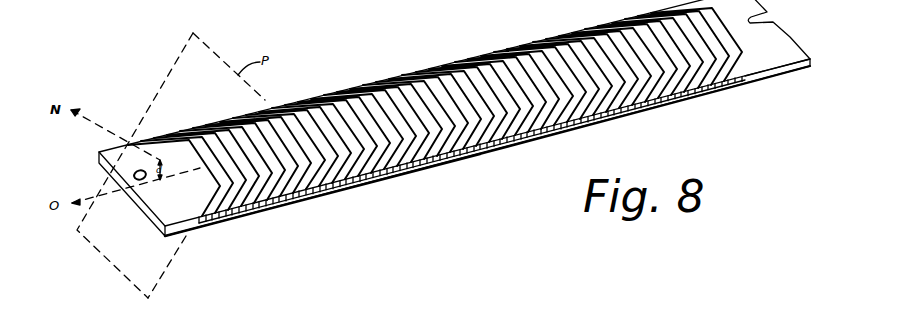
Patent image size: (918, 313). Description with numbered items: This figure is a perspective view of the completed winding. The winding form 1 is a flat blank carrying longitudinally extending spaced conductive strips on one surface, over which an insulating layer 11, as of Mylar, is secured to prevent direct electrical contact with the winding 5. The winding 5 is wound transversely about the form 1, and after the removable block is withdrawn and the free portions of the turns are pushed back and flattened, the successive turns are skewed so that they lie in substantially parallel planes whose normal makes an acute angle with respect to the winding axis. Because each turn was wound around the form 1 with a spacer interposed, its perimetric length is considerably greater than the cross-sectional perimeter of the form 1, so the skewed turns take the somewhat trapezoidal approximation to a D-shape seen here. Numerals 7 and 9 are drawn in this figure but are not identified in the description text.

The winding form 1 is at (166, 237).
The winding 5 is at (403, 78).
The base layer 7 is at (203, 229).
The front edge sheet 9 is at (743, 79).
The insulating layer 11 is at (257, 213).